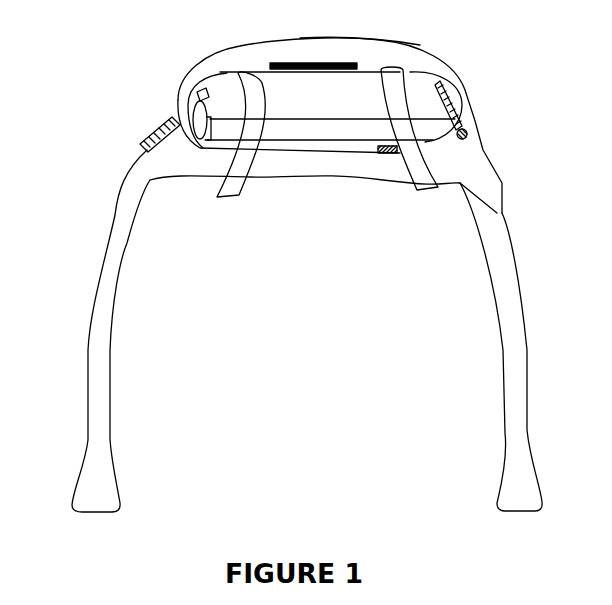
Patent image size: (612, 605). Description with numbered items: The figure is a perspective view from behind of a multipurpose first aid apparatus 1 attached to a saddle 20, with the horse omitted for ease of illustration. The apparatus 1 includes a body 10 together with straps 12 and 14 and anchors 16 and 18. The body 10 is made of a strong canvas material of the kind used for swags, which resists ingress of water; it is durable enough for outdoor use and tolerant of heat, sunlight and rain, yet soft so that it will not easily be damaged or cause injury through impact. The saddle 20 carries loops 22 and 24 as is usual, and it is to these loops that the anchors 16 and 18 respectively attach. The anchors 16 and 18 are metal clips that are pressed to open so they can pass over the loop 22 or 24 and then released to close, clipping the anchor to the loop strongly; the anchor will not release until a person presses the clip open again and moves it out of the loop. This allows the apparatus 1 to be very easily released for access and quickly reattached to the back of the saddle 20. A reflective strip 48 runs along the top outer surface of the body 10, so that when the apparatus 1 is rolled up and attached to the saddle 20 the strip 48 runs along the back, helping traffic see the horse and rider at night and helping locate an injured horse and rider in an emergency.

The multipurpose first aid apparatus 1 is at (213, 107).
The body 10 is at (333, 95).
The strap 12 is at (233, 77).
The strap 14 is at (419, 180).
The anchor 16 is at (185, 130).
The anchor 18 is at (453, 117).
The saddle 20 is at (319, 50).
The loop 22 is at (143, 140).
The loop 24 is at (466, 133).
The reflective strip 48 is at (317, 133).